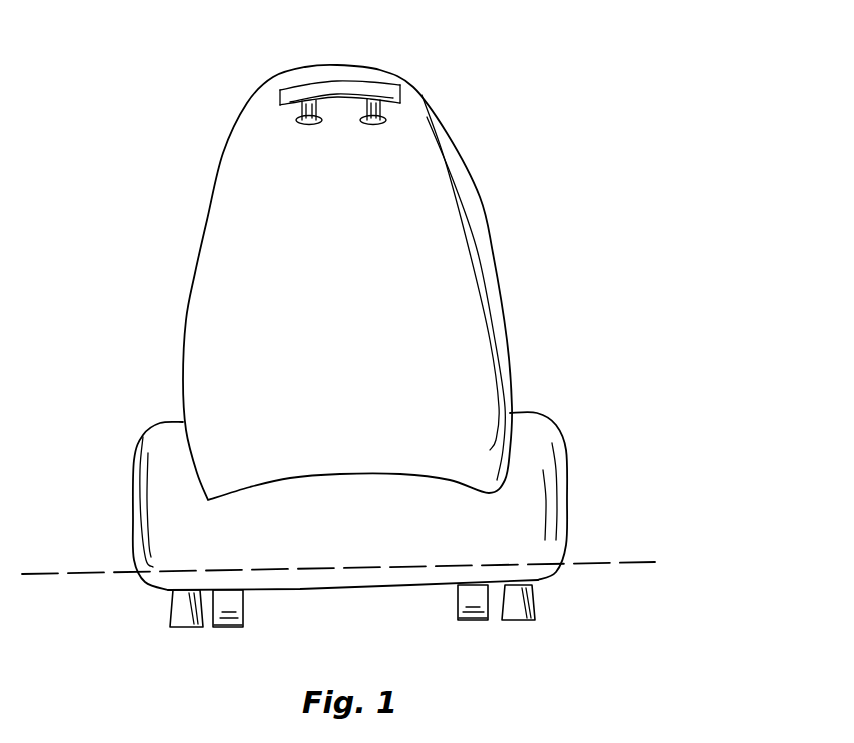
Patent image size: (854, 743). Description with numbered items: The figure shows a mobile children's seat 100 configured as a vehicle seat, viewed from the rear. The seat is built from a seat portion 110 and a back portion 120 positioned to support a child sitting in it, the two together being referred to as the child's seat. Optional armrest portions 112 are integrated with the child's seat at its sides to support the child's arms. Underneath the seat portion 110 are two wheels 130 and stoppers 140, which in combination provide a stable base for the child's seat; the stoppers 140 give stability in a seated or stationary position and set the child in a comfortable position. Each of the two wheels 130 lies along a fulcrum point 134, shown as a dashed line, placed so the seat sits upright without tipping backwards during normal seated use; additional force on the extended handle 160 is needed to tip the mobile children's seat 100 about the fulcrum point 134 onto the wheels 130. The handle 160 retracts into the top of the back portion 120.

The mobile children's seat 100 is at (569, 192).
The seat portion 110 is at (401, 446).
The armrest portions 112 is at (537, 438).
The back portion 120 is at (227, 277).
The wheels 130 is at (467, 598).
The fulcrum point 134 is at (657, 560).
The stoppers 140 is at (177, 608).
The handle 160 is at (378, 91).